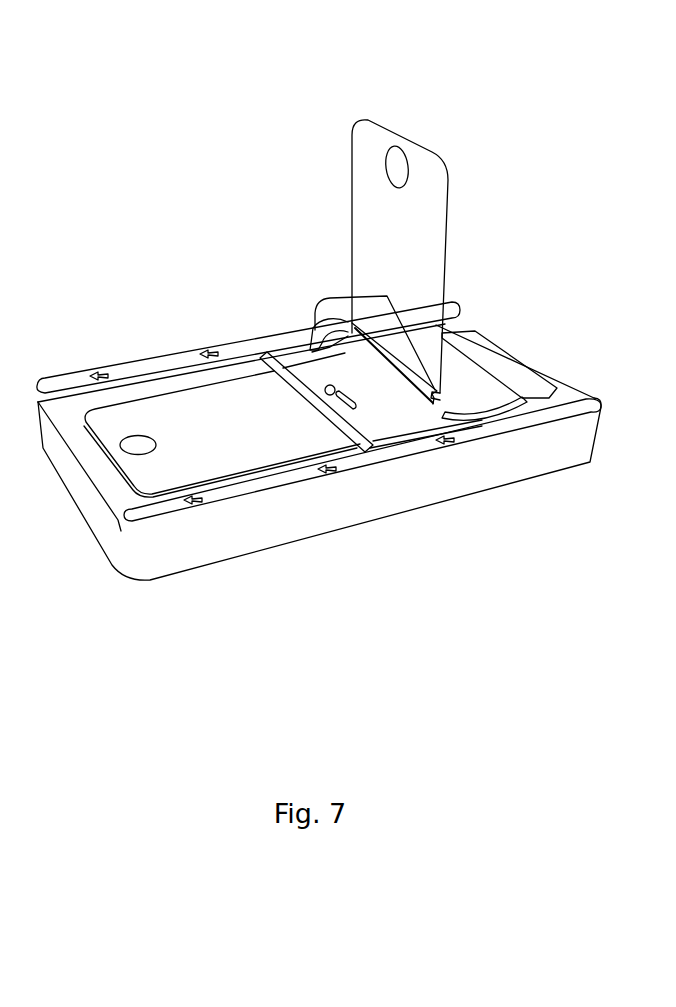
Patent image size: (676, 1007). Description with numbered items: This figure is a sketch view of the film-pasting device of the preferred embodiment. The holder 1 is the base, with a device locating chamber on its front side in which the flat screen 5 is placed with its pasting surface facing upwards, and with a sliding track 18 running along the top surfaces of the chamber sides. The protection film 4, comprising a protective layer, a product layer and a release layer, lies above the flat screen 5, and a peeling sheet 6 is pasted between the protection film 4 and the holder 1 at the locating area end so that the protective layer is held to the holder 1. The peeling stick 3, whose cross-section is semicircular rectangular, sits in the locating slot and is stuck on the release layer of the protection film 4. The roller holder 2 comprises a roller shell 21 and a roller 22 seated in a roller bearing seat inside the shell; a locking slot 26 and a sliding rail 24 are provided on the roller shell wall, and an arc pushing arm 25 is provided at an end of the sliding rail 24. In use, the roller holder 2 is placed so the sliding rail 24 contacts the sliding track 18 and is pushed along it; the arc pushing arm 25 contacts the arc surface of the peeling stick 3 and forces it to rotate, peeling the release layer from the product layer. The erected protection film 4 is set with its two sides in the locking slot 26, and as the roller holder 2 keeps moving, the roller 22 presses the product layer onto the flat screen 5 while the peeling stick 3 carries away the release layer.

The holder 1 is at (133, 568).
The roller holder 2 is at (338, 300).
The peeling stick 3 is at (272, 333).
The protection film 4 is at (430, 186).
The flat screen 5 is at (197, 468).
The peeling sheet 6 is at (514, 368).
The sliding track 18 is at (182, 375).
The roller shell 21 is at (478, 390).
The roller 22 is at (388, 368).
The sliding rail 24 is at (325, 360).
The arc pushing arm 25 is at (309, 332).
The locking slot 26 is at (440, 400).